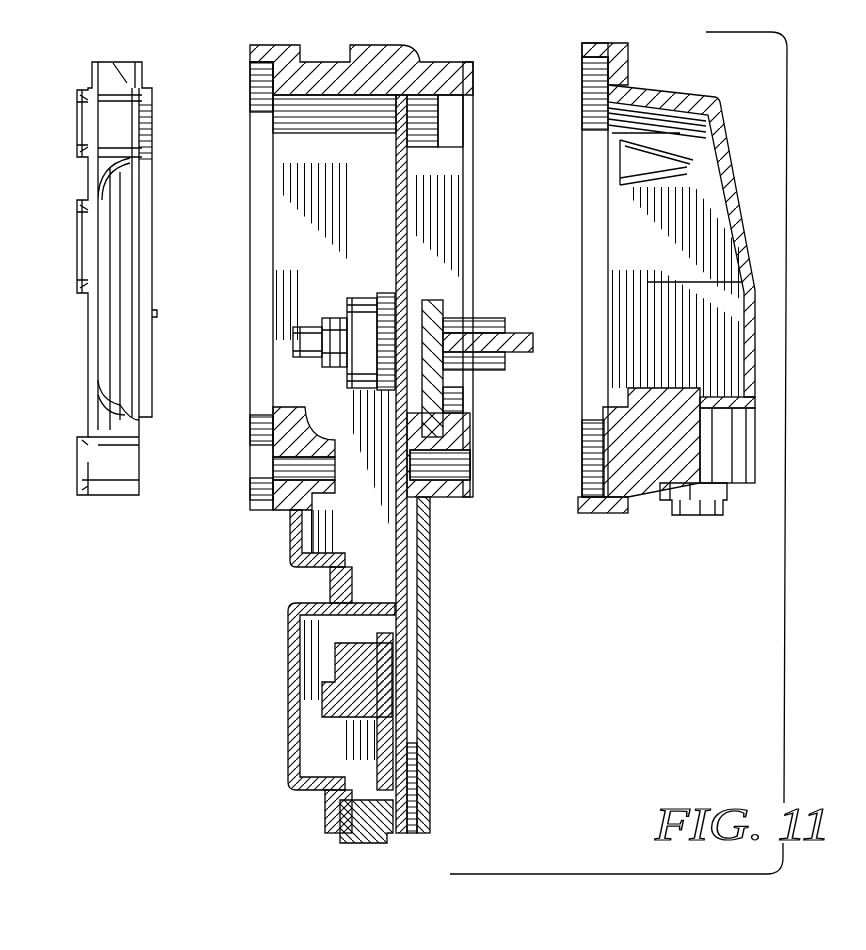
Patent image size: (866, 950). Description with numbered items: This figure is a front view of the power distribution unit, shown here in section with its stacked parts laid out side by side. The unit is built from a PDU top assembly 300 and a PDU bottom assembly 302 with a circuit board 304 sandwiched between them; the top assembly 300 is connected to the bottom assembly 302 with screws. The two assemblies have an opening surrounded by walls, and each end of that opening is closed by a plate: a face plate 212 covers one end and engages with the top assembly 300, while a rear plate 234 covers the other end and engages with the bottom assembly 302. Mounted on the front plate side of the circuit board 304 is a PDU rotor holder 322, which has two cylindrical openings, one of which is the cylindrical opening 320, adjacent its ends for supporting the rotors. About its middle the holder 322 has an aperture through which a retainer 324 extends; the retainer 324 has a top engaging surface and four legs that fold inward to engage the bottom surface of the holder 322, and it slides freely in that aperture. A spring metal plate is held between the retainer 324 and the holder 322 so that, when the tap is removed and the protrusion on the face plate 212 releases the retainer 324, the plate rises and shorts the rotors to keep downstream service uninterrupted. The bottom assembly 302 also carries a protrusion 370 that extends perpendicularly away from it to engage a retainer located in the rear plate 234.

The face plate 212 is at (106, 62).
The rear plate 234 is at (693, 92).
The PDU top assembly 300 is at (292, 540).
The PDU bottom assembly 302 is at (470, 310).
The circuit board 304 is at (388, 248).
The cylindrical opening 320 is at (303, 357).
The PDU rotor holder 322 is at (353, 303).
The retainer 324 is at (322, 338).
The protrusion 370 is at (513, 353).